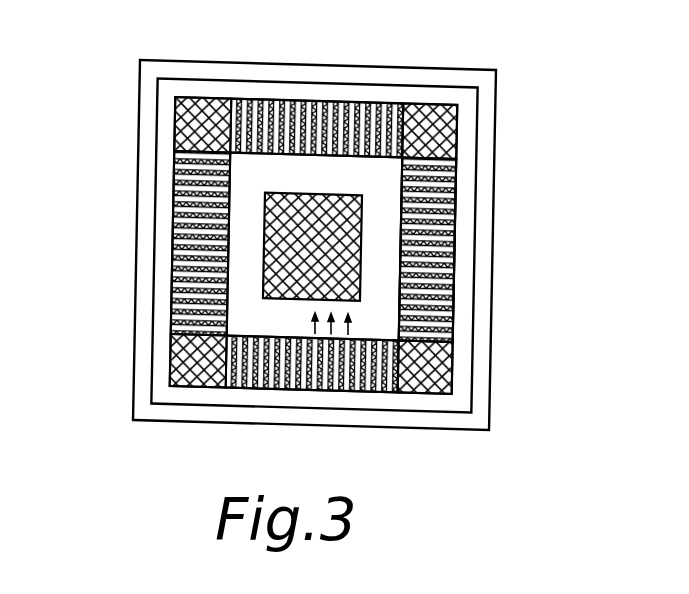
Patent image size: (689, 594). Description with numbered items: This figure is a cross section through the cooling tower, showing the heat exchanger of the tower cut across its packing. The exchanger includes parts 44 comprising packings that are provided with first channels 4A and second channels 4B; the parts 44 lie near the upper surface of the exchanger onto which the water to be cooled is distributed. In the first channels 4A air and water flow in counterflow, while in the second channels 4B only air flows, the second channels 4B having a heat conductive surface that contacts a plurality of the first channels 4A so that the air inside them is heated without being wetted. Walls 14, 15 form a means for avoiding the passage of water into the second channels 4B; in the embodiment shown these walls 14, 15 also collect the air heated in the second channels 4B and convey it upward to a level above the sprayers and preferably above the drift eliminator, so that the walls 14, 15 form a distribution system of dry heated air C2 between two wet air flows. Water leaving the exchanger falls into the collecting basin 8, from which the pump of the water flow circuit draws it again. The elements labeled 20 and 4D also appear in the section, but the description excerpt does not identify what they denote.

The wall 15 is at (290, 191).
The wall 14 is at (400, 186).
The heat exchanger part 44 is at (443, 219).
The package substrate frame 20 is at (458, 247).
The dry heated air flow C2 is at (246, 237).
The first channels 4A is at (453, 315).
The collecting basin 8 is at (458, 398).
The second channels 4B is at (365, 333).
The corner pad 4D is at (425, 380).